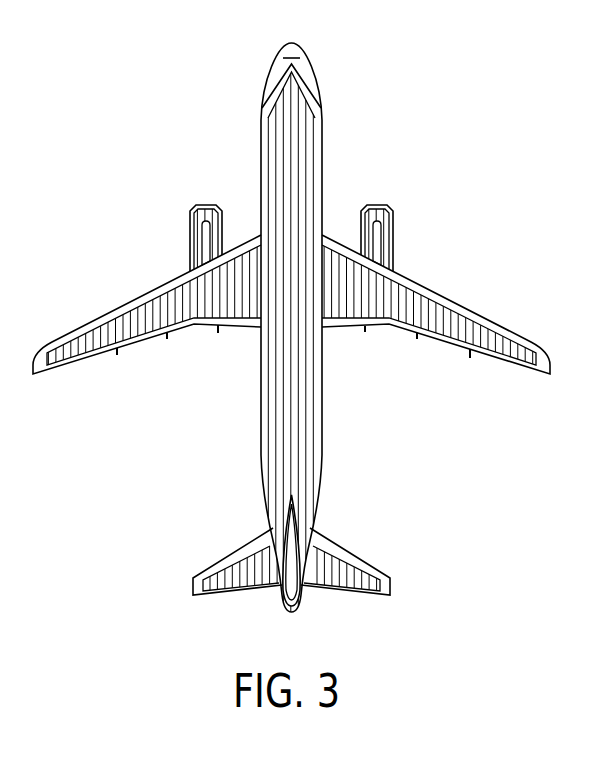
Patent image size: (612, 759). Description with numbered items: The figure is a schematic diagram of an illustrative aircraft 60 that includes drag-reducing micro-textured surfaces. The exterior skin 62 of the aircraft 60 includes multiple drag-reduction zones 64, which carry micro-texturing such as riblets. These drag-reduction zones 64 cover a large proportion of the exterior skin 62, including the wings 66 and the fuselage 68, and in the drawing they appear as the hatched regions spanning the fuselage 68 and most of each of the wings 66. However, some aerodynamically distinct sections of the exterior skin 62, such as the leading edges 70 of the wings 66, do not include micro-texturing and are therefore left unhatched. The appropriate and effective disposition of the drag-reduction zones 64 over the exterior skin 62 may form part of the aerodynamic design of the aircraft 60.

The aircraft 60 is at (374, 86).
The exterior skin 62 is at (272, 418).
The drag-reduction zones 64 is at (191, 228).
The wings 66 is at (127, 312).
The fuselage 68 is at (277, 507).
The leading edges 70 is at (455, 307).